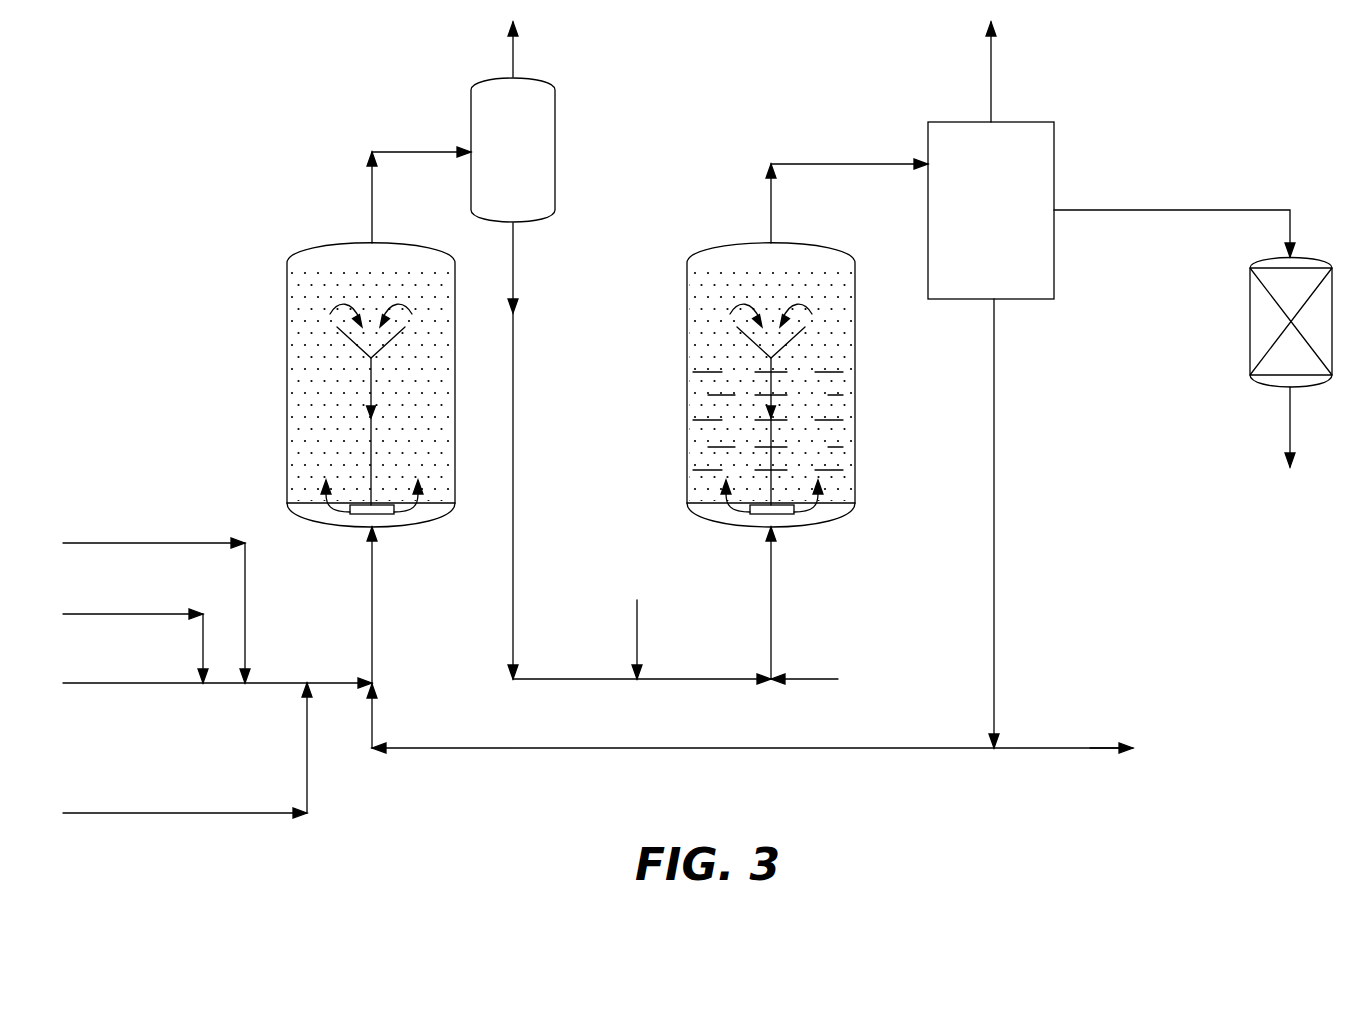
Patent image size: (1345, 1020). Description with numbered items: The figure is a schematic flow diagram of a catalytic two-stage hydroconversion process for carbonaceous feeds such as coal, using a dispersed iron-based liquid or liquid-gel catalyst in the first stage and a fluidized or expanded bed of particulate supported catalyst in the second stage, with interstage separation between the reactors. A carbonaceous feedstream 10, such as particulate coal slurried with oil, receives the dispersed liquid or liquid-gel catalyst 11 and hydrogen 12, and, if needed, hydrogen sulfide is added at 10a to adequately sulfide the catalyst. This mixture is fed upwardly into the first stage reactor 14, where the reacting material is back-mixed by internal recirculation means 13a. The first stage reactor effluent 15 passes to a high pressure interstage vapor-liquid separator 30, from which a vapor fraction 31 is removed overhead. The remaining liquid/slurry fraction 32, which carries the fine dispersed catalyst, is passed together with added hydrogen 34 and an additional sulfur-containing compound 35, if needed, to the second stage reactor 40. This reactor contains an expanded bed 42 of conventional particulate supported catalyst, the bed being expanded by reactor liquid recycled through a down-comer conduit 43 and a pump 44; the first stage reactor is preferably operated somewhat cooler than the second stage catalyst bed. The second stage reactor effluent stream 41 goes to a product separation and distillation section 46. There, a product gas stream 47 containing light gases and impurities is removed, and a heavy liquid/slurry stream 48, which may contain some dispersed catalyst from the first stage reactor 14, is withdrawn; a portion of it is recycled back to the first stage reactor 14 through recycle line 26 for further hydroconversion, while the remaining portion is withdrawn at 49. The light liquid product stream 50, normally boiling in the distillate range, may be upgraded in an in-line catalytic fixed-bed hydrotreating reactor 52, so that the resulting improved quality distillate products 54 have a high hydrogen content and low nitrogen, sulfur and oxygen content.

The feedstream 10 is at (155, 684).
The hydrogen sulfide addition 10a is at (155, 815).
The dispersed liquid or liquid-gel catalyst 11 is at (207, 645).
The hydrogen 12 is at (247, 608).
The internal recirculation means 13a is at (372, 432).
The first stage reactor 14 is at (287, 320).
The first stage reactor effluent 15 is at (407, 147).
The recycle line 26 is at (748, 750).
The high pressure interstage vapor-liquid separator 30 is at (555, 165).
The vapor fraction 31 is at (513, 58).
The liquid/slurry fraction 32 is at (513, 355).
The added hydrogen 34 is at (636, 630).
The additional sulfur-containing compound 35 is at (718, 681).
The second stage reactor 40 is at (712, 246).
The second stage reactor effluent stream 41 is at (868, 162).
The expanded bed of particulate supported catalyst 42 is at (805, 405).
The down-comer conduit 43 is at (771, 432).
The pump 44 is at (782, 512).
The product separation and distillation section 46 is at (976, 224).
The product gas stream 47 is at (993, 88).
The heavy liquid/slurry stream 48 is at (996, 575).
The withdrawn slurry portion 49 is at (1080, 750).
The light liquid product stream 50 is at (1178, 211).
The in-line catalytic fixed-bed hydrotreating reactor 52 is at (1250, 335).
The improved quality distillate products 54 is at (1290, 428).